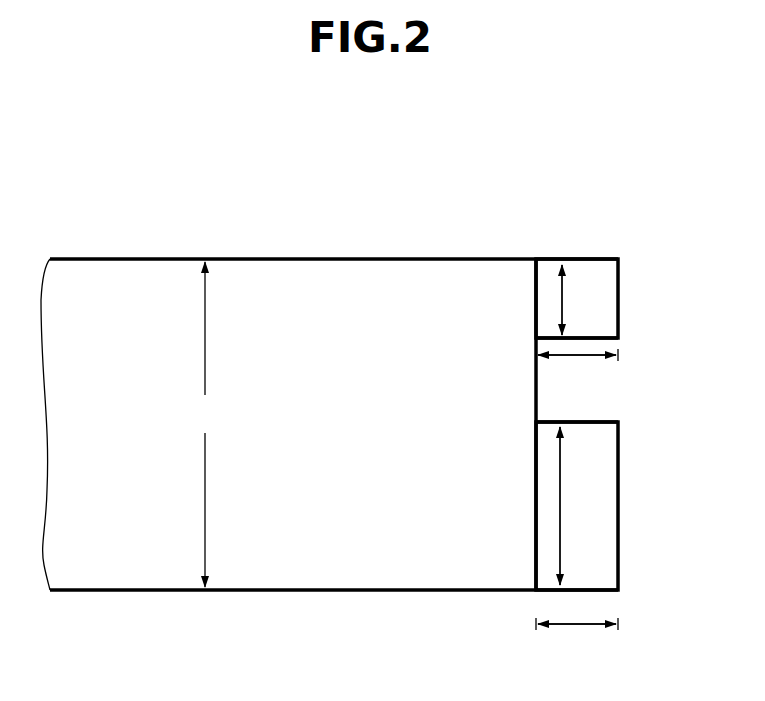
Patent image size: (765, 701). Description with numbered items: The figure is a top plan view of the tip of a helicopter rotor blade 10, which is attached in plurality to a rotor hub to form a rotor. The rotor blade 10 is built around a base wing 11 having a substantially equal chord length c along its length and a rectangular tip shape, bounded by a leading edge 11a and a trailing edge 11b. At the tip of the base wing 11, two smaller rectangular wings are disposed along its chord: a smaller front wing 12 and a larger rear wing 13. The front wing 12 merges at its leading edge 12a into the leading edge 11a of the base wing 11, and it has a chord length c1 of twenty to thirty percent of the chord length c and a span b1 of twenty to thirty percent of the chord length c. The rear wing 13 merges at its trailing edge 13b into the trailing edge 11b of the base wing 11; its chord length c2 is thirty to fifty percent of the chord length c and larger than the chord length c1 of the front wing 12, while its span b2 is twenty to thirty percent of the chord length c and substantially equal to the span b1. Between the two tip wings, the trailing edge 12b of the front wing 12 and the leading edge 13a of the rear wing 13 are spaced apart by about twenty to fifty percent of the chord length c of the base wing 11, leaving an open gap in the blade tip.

The rotor blade 10 is at (201, 165).
The base wing 11 is at (323, 270).
The leading edge of the base wing 11a is at (426, 258).
The trailing edge of the base wing 11b is at (380, 592).
The front wing 12 is at (608, 277).
The leading edge of the front wing 12a is at (578, 258).
The trailing edge of the front wing 12b is at (598, 337).
The rear wing 13 is at (608, 471).
The leading edge of the rear wing 13a is at (598, 421).
The trailing edge of the rear wing 13b is at (598, 590).
The chord length of the base wing c is at (203, 424).
The chord length of the front wing c1 is at (579, 300).
The span of the front wing b1 is at (578, 366).
The chord length of the rear wing c2 is at (579, 506).
The span of the rear wing b2 is at (577, 637).